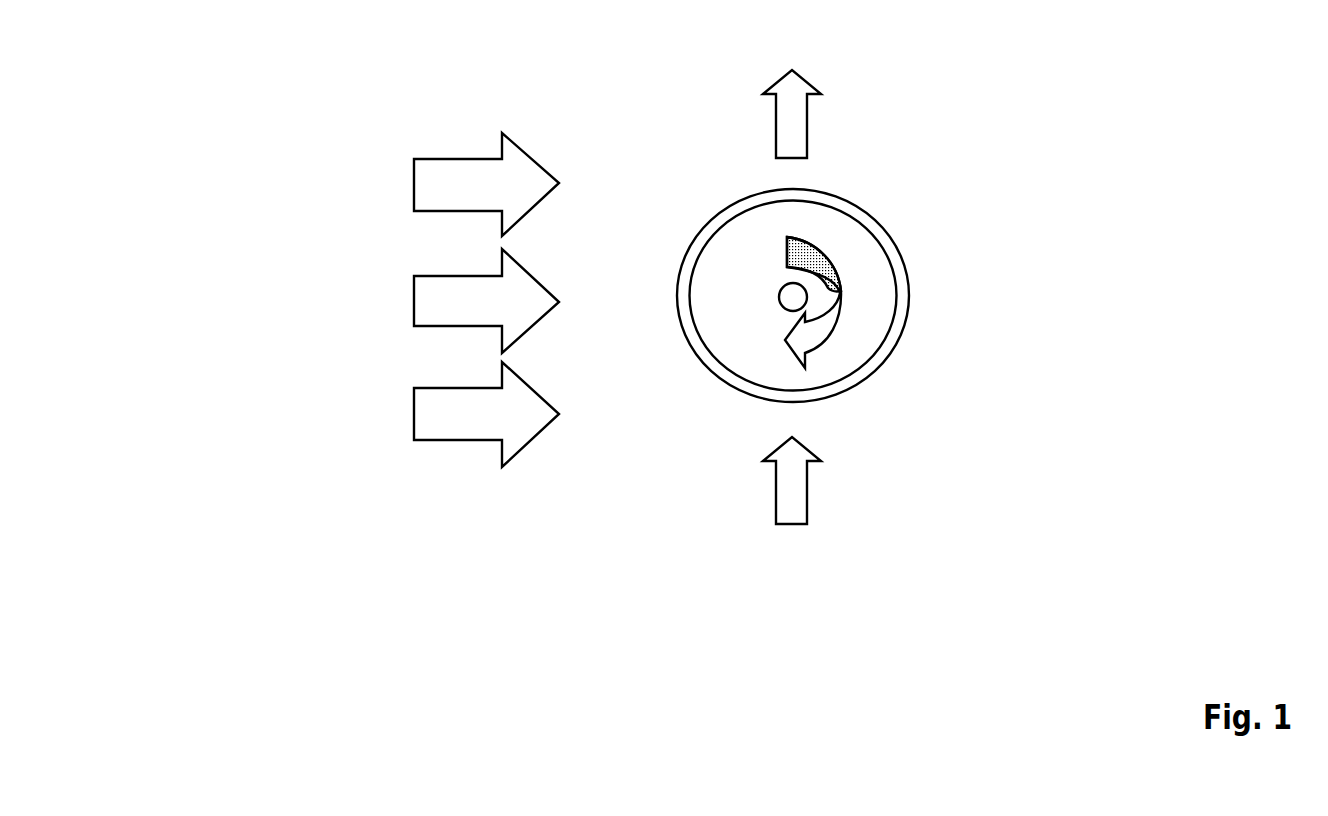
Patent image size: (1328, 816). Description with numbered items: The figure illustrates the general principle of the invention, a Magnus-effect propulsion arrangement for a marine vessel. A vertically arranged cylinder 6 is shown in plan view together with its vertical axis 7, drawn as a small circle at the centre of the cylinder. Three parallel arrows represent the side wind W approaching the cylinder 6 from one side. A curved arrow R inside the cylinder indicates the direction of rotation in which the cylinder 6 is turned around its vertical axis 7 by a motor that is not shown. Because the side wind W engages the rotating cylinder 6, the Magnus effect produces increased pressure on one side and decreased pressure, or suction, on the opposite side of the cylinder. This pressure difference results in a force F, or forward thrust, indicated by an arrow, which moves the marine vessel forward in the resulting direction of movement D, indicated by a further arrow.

The wind W is at (311, 342).
The direction of movement of the marine vessel D is at (854, 110).
The force or forward thrust F is at (853, 489).
The vertically arranged cylinder 6 is at (932, 256).
The direction of rotation R is at (867, 346).
The vertical axis 7 is at (761, 272).